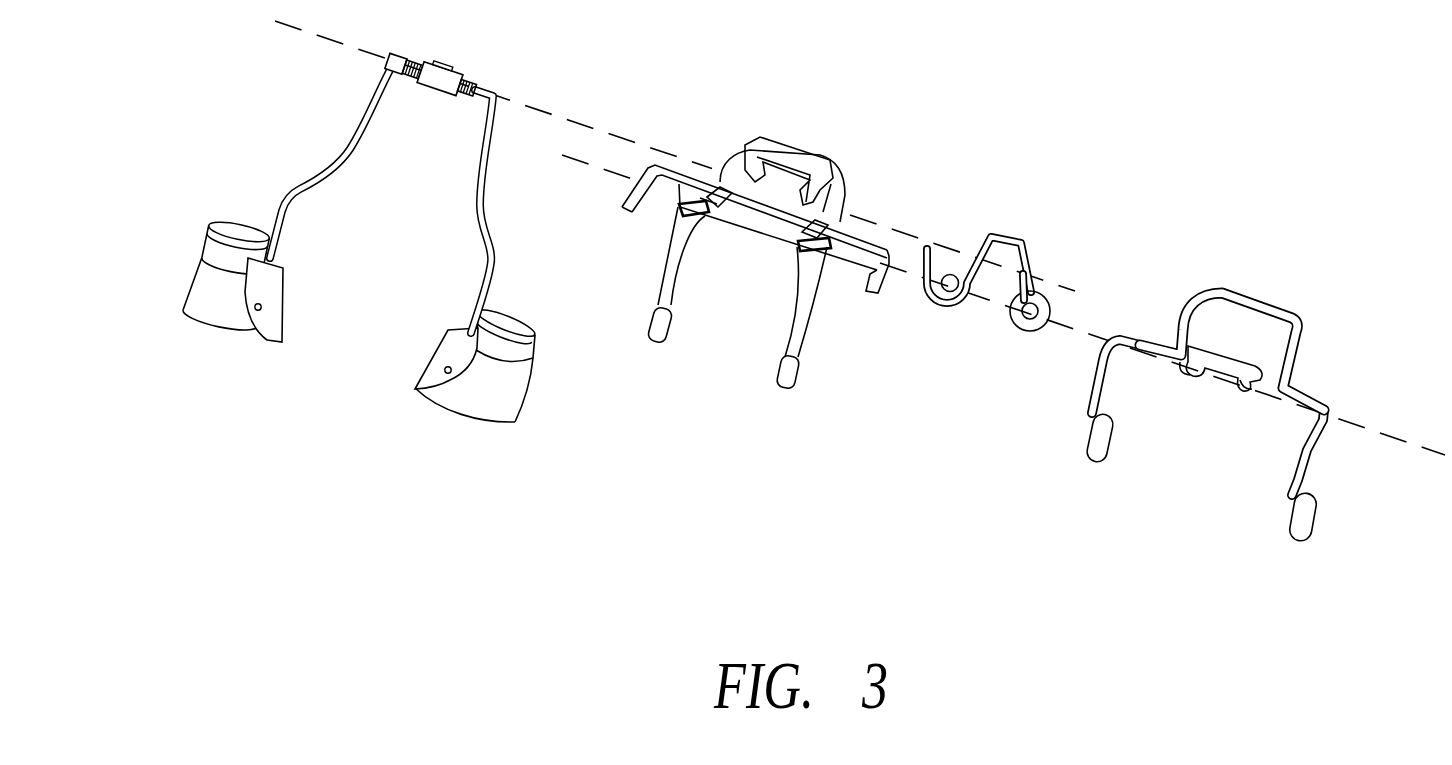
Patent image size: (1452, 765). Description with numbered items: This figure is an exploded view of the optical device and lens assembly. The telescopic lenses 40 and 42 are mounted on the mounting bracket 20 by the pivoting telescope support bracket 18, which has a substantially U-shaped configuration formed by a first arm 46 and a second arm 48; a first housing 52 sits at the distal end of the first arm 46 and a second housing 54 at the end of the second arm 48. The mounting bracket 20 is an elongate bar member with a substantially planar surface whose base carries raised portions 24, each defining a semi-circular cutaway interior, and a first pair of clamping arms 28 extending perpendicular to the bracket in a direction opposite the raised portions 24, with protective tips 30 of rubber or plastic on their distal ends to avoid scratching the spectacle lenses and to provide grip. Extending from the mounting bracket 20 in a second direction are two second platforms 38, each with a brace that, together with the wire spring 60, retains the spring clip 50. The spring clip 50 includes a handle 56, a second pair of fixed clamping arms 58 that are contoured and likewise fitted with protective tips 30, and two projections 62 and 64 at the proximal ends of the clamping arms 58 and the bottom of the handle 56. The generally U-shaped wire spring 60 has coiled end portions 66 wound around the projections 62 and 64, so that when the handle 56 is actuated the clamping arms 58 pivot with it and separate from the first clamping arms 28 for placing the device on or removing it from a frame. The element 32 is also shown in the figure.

The telescope support bracket 18 is at (284, 184).
The mounting bracket 20 is at (654, 219).
The raised portions 24 is at (720, 187).
The first pair of clamping arms 28 is at (678, 277).
The protective tips 30 is at (655, 350).
The housing 32 is at (775, 200).
The second platforms 38 is at (684, 200).
The telescopic lens 40 is at (207, 333).
The telescopic lens 42 is at (485, 423).
The first arm 46 is at (361, 130).
The second arm 48 is at (486, 199).
The spring clip member 50 is at (1302, 287).
The first housing 52 is at (197, 278).
The second housing 54 is at (521, 401).
The handle 56 is at (1213, 289).
The second pair of fixed clamping arms 58 is at (1108, 377).
The wire spring 60 is at (1025, 243).
The projection 62 is at (1238, 384).
The projection 64 is at (1205, 372).
The end portions of the spring 66 is at (1049, 308).